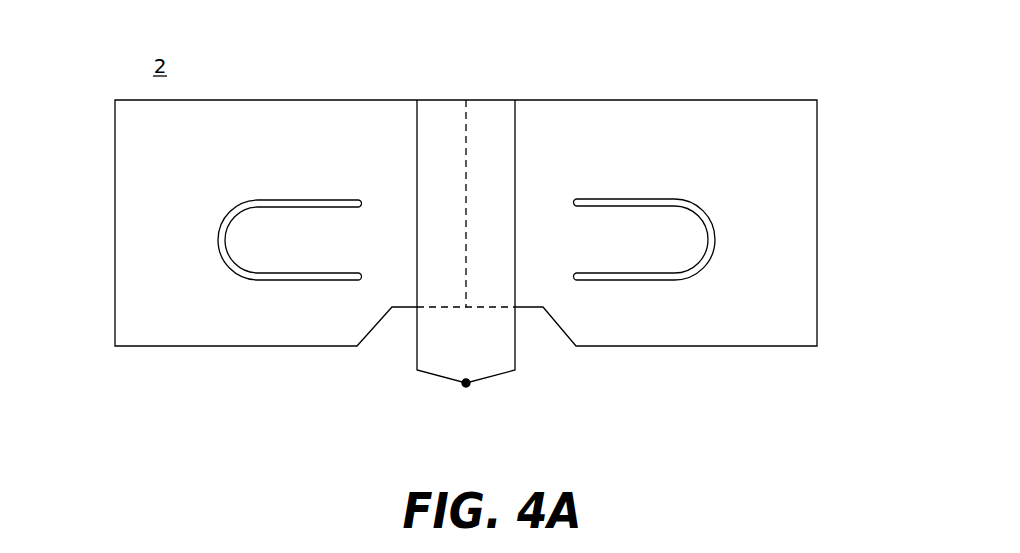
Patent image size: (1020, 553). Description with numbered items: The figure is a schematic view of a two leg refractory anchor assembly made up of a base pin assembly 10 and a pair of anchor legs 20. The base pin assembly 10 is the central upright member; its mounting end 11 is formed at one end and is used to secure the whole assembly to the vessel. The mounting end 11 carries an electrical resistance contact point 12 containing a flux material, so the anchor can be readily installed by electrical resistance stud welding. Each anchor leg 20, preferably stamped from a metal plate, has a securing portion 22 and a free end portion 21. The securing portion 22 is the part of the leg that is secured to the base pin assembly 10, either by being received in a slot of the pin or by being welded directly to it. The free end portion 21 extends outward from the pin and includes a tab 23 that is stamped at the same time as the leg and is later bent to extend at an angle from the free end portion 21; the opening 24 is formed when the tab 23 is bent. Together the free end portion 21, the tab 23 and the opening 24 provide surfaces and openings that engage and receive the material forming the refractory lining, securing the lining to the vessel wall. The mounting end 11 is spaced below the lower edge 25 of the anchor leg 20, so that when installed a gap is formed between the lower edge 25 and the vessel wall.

The base pin assembly 10 is at (423, 270).
The mounting end 11 is at (443, 365).
The electrical resistance contact point 12 is at (466, 385).
The anchor leg 20 is at (497, 219).
The free end portion 21 is at (790, 152).
The securing portion 22 is at (546, 162).
The tab 23 is at (632, 253).
The opening 24 is at (680, 282).
The lower edge 25 is at (210, 347).